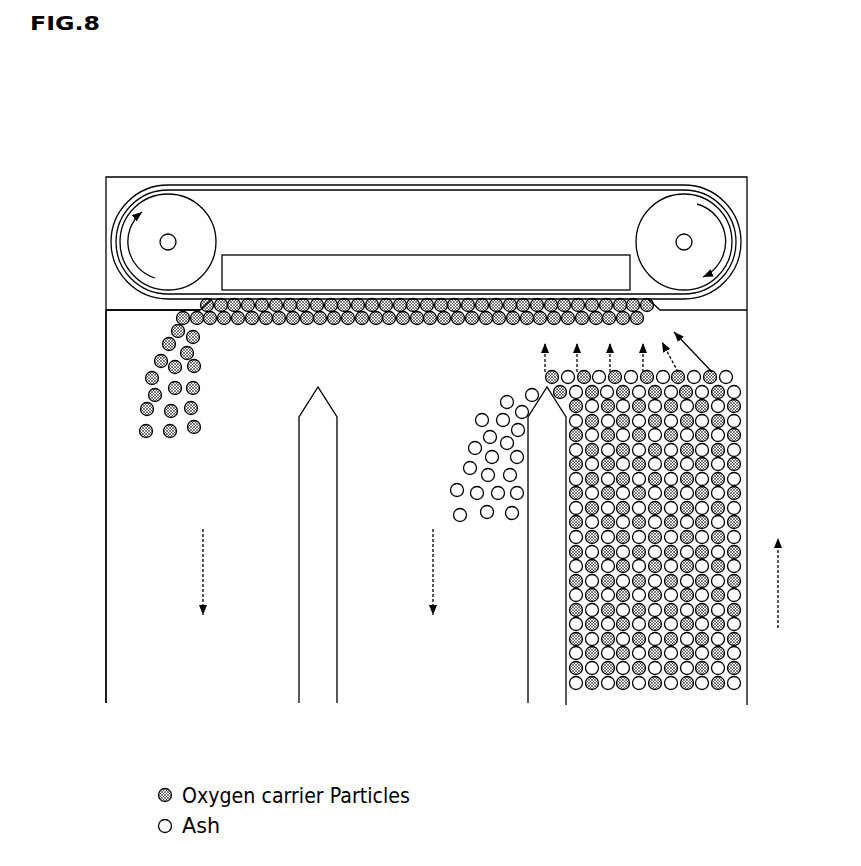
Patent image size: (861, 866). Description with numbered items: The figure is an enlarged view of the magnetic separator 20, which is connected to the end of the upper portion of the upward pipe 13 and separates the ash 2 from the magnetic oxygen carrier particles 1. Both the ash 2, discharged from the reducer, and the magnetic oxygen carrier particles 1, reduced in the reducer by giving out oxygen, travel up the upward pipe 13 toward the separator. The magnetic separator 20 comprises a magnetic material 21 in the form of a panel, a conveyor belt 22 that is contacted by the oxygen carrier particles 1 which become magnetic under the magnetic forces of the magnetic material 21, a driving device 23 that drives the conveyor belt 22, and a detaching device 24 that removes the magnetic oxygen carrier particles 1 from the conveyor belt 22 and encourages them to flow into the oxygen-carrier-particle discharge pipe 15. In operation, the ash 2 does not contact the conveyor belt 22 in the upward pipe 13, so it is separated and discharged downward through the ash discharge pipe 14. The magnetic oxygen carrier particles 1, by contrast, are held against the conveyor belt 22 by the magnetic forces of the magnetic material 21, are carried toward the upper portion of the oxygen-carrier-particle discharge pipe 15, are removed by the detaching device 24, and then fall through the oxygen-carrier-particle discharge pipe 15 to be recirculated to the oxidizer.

The magnetic oxygen carrier particle 1 is at (549, 303).
The ash 2 is at (487, 520).
The upward pipe 13 is at (747, 462).
The ash discharge pipe 14 is at (380, 610).
The oxygen-carrier-particle discharge pipe 15 is at (138, 552).
The magnetic separator 20 is at (763, 157).
The magnetic material 21 is at (428, 270).
The conveyor belt 22 is at (683, 297).
The driving device for the conveyor belt 23 is at (172, 208).
The detaching device 24 is at (157, 311).